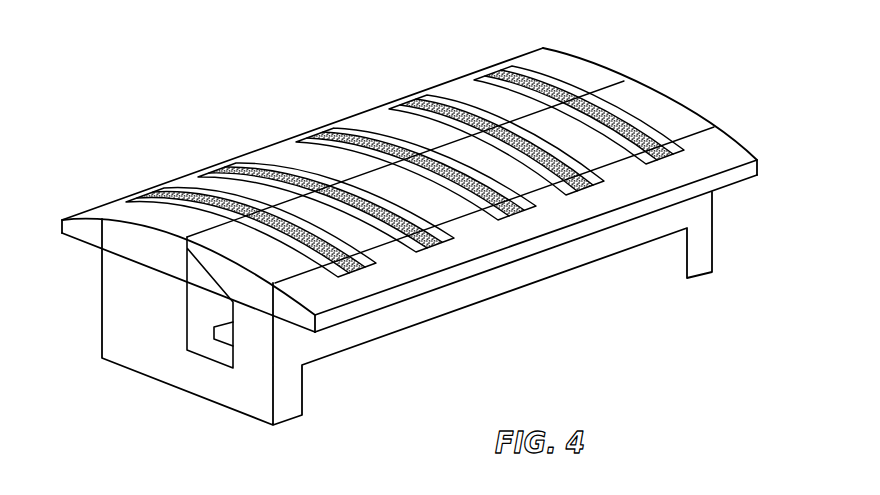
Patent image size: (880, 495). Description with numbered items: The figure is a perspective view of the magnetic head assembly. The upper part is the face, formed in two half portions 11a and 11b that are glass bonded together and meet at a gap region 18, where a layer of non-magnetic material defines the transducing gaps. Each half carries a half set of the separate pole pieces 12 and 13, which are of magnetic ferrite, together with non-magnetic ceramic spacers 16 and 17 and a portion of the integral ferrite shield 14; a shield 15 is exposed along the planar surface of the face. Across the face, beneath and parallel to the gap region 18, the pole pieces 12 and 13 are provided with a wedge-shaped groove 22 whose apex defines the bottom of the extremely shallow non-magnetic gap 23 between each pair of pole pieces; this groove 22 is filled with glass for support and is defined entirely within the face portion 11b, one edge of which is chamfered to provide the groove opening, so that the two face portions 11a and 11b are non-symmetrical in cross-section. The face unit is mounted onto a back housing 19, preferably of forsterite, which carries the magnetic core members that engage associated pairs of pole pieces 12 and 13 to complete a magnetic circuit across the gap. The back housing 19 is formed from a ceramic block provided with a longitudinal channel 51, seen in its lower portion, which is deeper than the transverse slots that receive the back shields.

The face half portion 11a is at (442, 85).
The face half portion 11b is at (728, 178).
The pole piece 12 is at (409, 208).
The pole piece 13 is at (348, 273).
The shield 14 is at (156, 195).
The shield 15 is at (367, 242).
The spacer 16 is at (375, 135).
The spacer 17 is at (500, 190).
The gap region 18 is at (585, 97).
The back housing 19 is at (122, 313).
The wedge-shaped groove 22 is at (210, 283).
The non-magnetic gap 23 is at (153, 268).
The longitudinal channel 51 is at (207, 316).